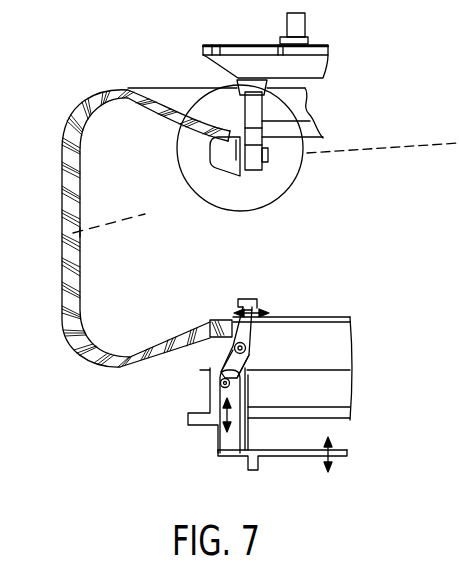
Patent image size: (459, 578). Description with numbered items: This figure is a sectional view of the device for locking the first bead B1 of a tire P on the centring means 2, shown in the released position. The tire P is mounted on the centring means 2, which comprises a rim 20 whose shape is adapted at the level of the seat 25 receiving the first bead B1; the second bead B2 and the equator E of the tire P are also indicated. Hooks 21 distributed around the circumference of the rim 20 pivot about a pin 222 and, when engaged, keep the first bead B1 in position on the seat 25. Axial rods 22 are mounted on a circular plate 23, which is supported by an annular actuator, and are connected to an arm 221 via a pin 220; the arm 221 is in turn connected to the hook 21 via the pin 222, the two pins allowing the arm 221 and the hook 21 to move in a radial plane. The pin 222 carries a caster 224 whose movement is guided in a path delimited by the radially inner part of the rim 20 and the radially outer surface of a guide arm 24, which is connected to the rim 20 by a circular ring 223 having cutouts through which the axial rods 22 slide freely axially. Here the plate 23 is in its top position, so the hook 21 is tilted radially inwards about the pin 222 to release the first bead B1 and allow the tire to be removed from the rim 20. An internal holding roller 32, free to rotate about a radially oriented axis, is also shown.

The centring means 2 is at (257, 374).
The rim 20 is at (223, 350).
The hook 21 is at (250, 325).
The axial rod 22 is at (213, 447).
The circular plate 23 is at (270, 457).
The guide arm 24 is at (247, 396).
The seat 25 is at (232, 316).
The pin 220 is at (228, 383).
The arm 221 is at (247, 349).
The pin 222 is at (248, 355).
The circular ring 223 is at (250, 432).
The caster 224 is at (247, 357).
The internal holding roller 32 is at (230, 167).
The first bead B1 is at (217, 318).
The second bead B2 is at (215, 133).
The equator E is at (116, 221).
The tire P is at (78, 345).